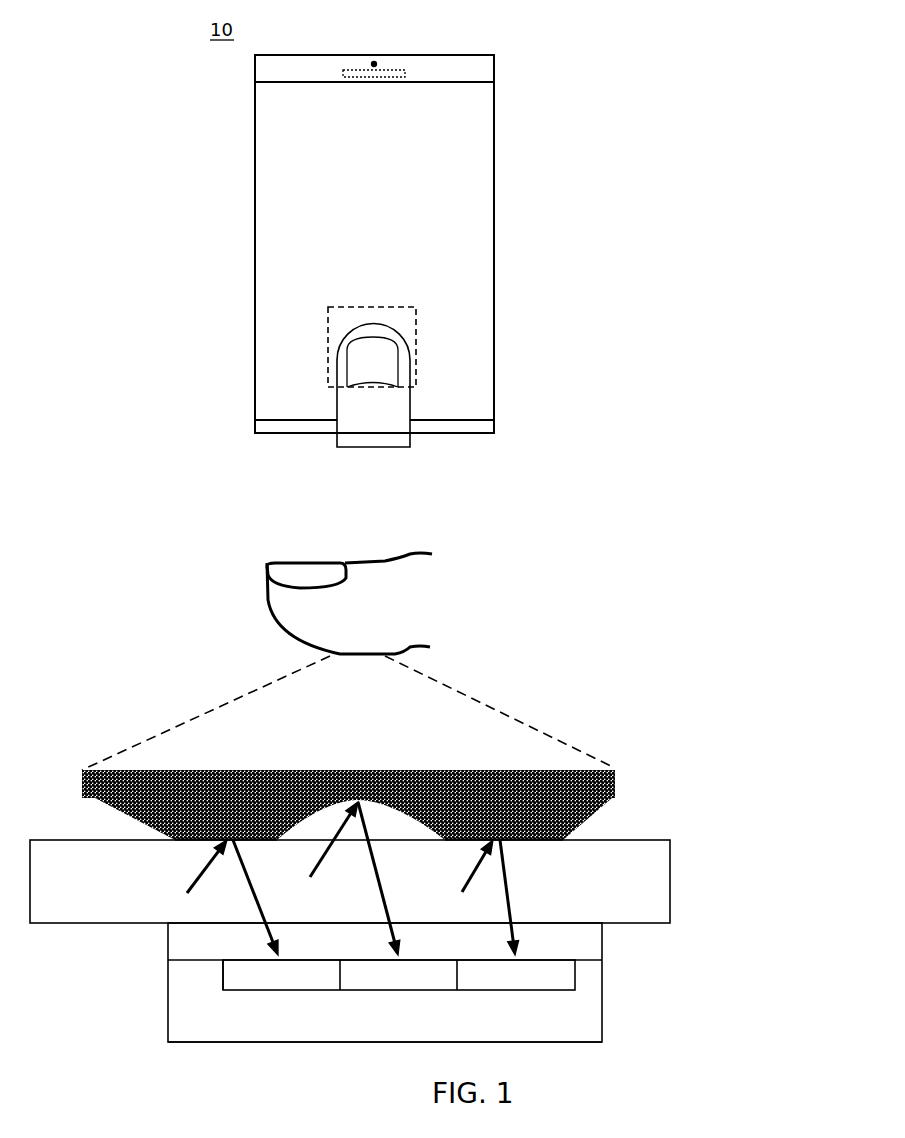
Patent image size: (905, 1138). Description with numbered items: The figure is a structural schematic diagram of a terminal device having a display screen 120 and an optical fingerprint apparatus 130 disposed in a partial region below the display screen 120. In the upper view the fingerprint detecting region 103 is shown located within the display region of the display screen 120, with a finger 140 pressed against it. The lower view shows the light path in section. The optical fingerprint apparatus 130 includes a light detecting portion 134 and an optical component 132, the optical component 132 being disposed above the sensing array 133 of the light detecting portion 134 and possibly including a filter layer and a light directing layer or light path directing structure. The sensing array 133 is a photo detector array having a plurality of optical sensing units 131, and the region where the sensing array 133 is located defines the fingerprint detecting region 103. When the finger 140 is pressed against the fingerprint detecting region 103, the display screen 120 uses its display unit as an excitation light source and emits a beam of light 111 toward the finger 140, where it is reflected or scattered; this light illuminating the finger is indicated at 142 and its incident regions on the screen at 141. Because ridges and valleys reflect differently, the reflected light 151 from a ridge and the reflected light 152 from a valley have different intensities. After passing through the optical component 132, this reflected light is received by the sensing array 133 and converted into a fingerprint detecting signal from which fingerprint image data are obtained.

The display screen 120 is at (495, 246).
The fingerprint detecting region 103 is at (416, 345).
The finger 140 is at (373, 434).
The light emitted toward finger 142 is at (348, 794).
The light incident region on screen 141 is at (369, 823).
The beam of light 111 is at (320, 854).
The reflected light from the ridge 151 is at (391, 897).
The reflected light from the valley 152 is at (386, 878).
The optical fingerprint apparatus 130 is at (773, 920).
The optical component 132 is at (602, 943).
The light detecting portion 134 is at (602, 998).
The optical sensing units 131 is at (399, 975).
The sensing array 133 is at (222, 968).